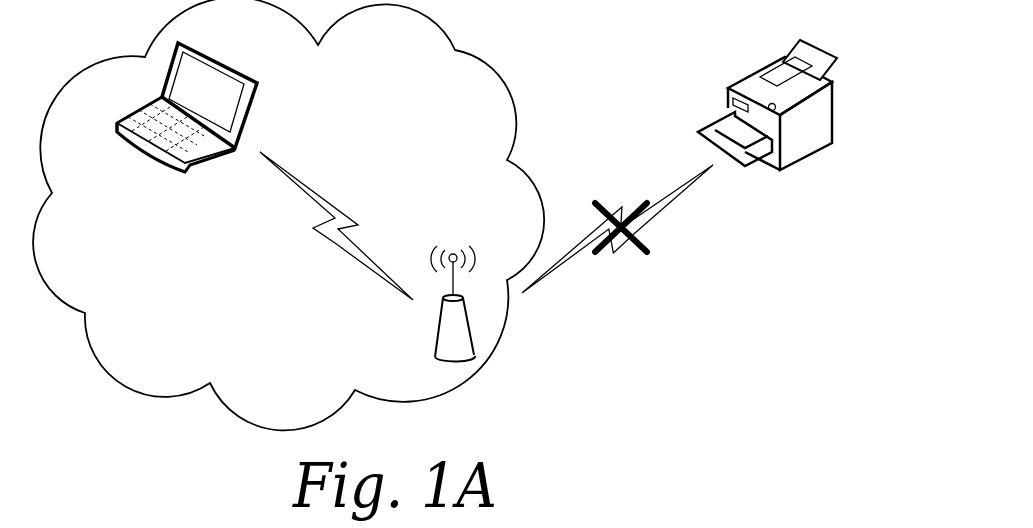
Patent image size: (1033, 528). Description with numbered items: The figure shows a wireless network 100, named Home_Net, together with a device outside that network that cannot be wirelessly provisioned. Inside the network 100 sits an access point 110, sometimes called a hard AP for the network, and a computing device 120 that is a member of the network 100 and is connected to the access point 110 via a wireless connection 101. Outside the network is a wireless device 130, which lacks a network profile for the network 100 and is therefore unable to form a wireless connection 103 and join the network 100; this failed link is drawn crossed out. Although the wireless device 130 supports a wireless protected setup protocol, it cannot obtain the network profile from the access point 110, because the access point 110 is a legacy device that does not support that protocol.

The wireless network 100 is at (493, 65).
The computing device 120 is at (120, 145).
The wireless connection 101 is at (334, 243).
The access point 110 is at (433, 348).
The wireless connection 103 is at (655, 252).
The wireless device 130 is at (803, 170).